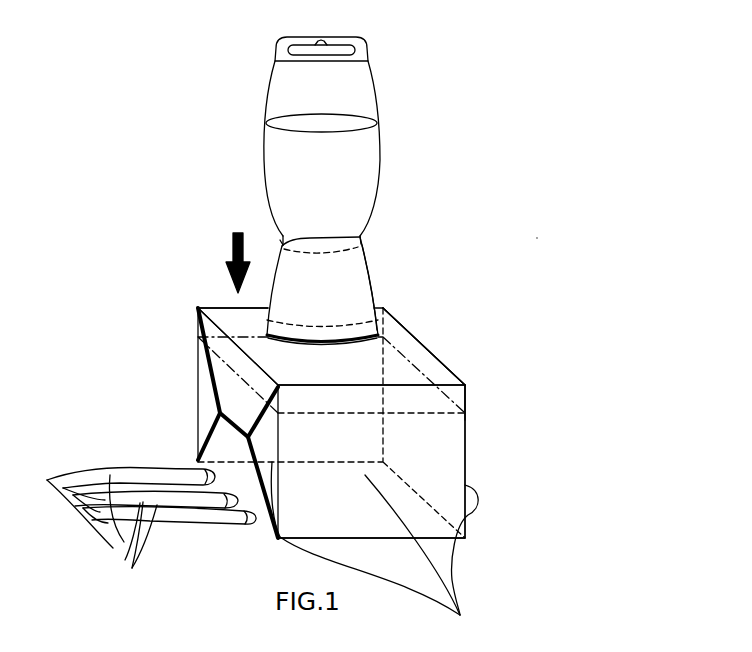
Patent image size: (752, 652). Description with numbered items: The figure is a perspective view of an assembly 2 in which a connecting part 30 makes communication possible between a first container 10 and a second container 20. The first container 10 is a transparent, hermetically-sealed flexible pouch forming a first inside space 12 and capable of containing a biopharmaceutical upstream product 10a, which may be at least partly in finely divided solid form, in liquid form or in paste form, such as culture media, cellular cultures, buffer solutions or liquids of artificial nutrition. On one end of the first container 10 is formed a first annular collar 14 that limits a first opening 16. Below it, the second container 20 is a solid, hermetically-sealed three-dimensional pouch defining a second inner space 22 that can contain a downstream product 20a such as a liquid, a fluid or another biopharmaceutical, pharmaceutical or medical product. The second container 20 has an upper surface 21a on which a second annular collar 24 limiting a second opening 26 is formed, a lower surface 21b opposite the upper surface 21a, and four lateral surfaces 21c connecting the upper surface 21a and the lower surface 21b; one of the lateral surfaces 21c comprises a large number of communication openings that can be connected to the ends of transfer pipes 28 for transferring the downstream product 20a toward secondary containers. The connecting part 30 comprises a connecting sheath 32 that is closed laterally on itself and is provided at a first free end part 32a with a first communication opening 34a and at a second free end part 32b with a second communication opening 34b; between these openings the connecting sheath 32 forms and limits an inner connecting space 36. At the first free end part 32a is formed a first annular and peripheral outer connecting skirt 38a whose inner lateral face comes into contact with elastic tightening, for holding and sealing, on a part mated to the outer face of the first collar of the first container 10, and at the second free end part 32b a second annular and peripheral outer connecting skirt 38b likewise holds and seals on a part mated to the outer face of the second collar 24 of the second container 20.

The assembly 2 is at (548, 230).
The first container 10 is at (404, 119).
The biopharmaceutical upstream product 10a is at (358, 173).
The first inside space 12 is at (278, 97).
The first annular collar 14 is at (258, 220).
The first opening 16 is at (362, 232).
The second container 20 is at (510, 434).
The downstream product 20a is at (442, 470).
The upper surface 21a is at (440, 360).
The lower surface 21b is at (455, 540).
The lateral surfaces 21c is at (384, 555).
The second inner space 22 is at (465, 386).
The second annular collar 24 is at (436, 358).
The second opening 26 is at (303, 341).
The transfer pipes 28 is at (151, 531).
The connecting part 30 is at (395, 275).
The connecting sheath 32 is at (380, 290).
The first free end part 32a is at (388, 232).
The second free end part 32b is at (402, 326).
The first communication opening 34a is at (278, 251).
The second communication opening 34b is at (285, 352).
The inner connecting space 36 is at (290, 287).
The first annular and peripheral outer connecting skirt 38a is at (366, 253).
The second annular and peripheral outer connecting skirt 38b is at (215, 400).